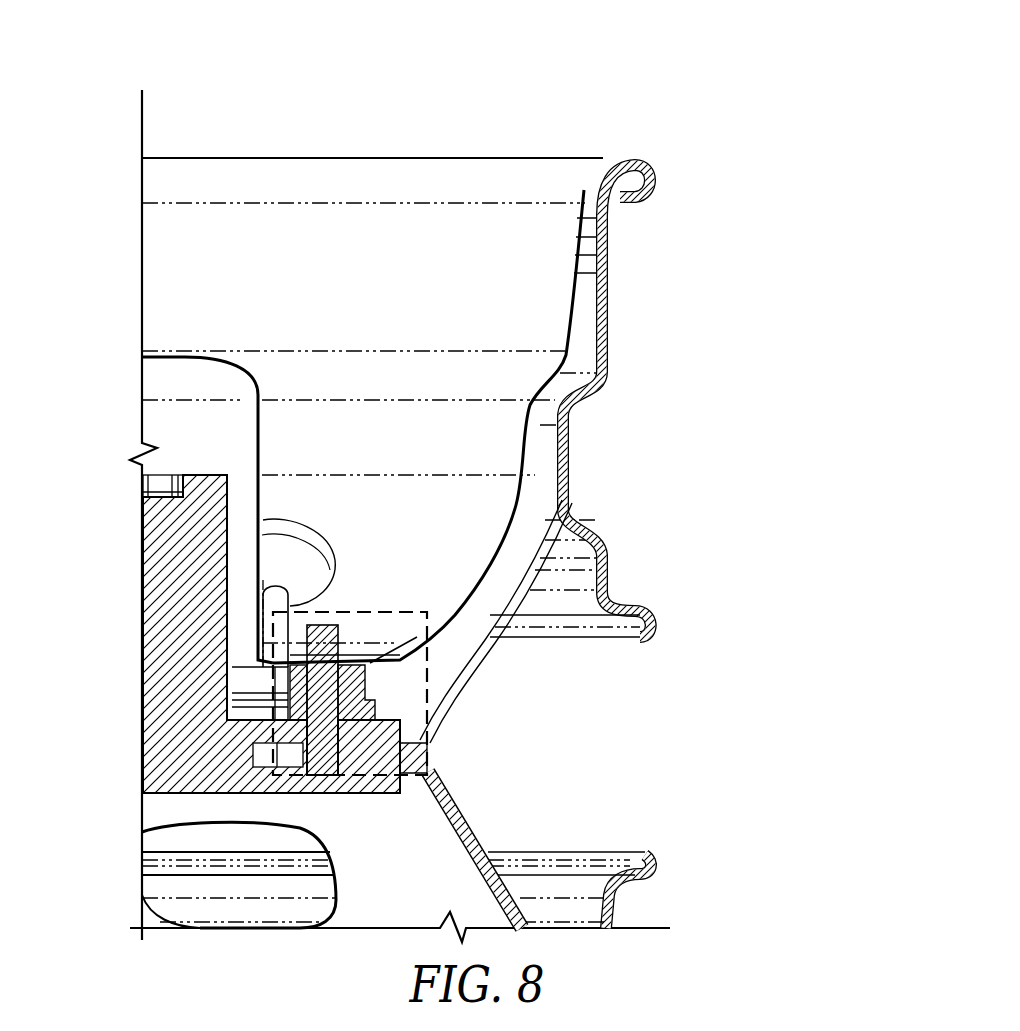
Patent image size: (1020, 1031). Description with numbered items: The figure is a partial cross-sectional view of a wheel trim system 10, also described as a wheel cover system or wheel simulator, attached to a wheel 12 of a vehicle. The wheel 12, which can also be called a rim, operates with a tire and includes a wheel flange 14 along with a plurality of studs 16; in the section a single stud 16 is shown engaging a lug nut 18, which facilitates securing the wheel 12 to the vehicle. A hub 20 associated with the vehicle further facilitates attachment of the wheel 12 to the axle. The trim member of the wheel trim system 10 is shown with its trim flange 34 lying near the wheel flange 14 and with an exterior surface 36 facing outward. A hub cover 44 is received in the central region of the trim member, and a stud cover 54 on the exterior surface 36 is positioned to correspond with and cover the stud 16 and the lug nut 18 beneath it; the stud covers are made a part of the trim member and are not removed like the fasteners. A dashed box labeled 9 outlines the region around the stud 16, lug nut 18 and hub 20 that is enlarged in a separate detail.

The wheel trim system 10 is at (748, 120).
The wheel 12 is at (627, 316).
The wheel flange 14 is at (652, 193).
The stud 16 is at (440, 743).
The lug nut 18 is at (435, 690).
The hub 20 is at (184, 633).
The trim flange 34 is at (658, 167).
The exterior surface 36 is at (422, 226).
The hub cover 44 is at (186, 378).
The stud cover 54 is at (277, 578).
The detail view 9 is at (433, 757).